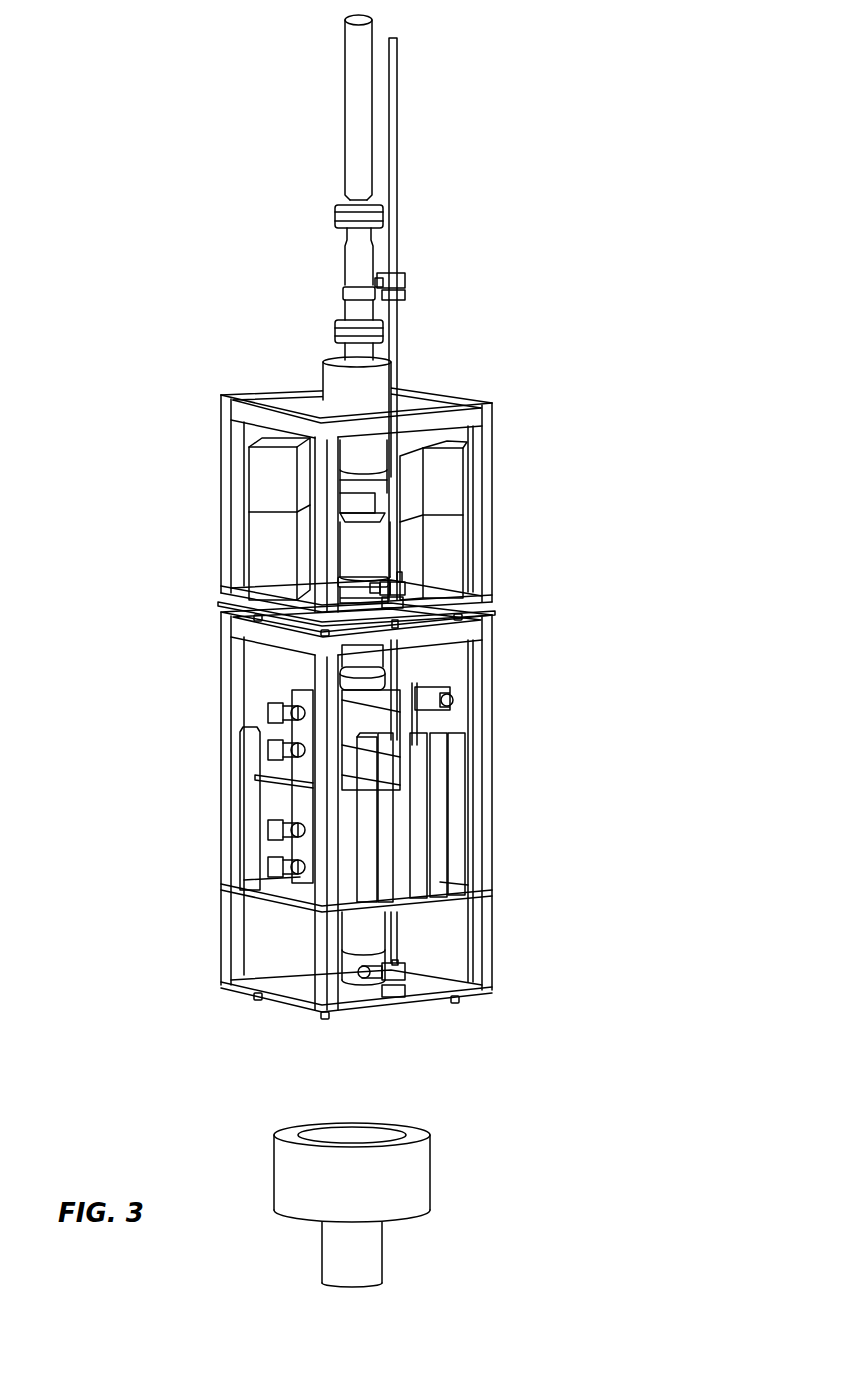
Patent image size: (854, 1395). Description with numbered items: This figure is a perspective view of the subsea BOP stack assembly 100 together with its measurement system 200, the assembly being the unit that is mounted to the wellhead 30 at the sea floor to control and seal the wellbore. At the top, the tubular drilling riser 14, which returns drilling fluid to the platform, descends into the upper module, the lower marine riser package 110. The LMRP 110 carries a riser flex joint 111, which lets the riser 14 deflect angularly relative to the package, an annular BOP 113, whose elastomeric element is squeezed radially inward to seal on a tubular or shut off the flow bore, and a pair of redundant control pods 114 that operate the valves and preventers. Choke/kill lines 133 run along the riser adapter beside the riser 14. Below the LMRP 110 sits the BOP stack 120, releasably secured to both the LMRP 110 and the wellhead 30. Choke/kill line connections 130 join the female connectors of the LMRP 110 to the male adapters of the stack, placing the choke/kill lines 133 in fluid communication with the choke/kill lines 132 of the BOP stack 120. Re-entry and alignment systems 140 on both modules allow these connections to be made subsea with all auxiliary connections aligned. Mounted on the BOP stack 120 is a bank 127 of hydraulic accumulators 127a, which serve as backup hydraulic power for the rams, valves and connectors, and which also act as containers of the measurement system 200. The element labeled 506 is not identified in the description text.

The tubular drilling riser 14 is at (350, 96).
The choke/kill lines 133 is at (397, 143).
The riser flex joint 111 is at (350, 440).
The control pods 114 is at (260, 482).
The lower marine riser package 110 is at (490, 482).
The annular BOP 113 is at (375, 553).
The choke/kill line connections 130 is at (405, 590).
The re-entry and alignment systems 140 is at (460, 612).
The measurement system 200 is at (610, 652).
The choke/kill lines 132 is at (405, 693).
The BOP stack 120 is at (492, 748).
The accumulator bank 127 is at (443, 781).
The hydraulic accumulators 127a is at (455, 851).
The subsea BOP stack assembly 100 is at (180, 780).
The base 506 is at (347, 970).
The wellhead 30 is at (417, 1183).